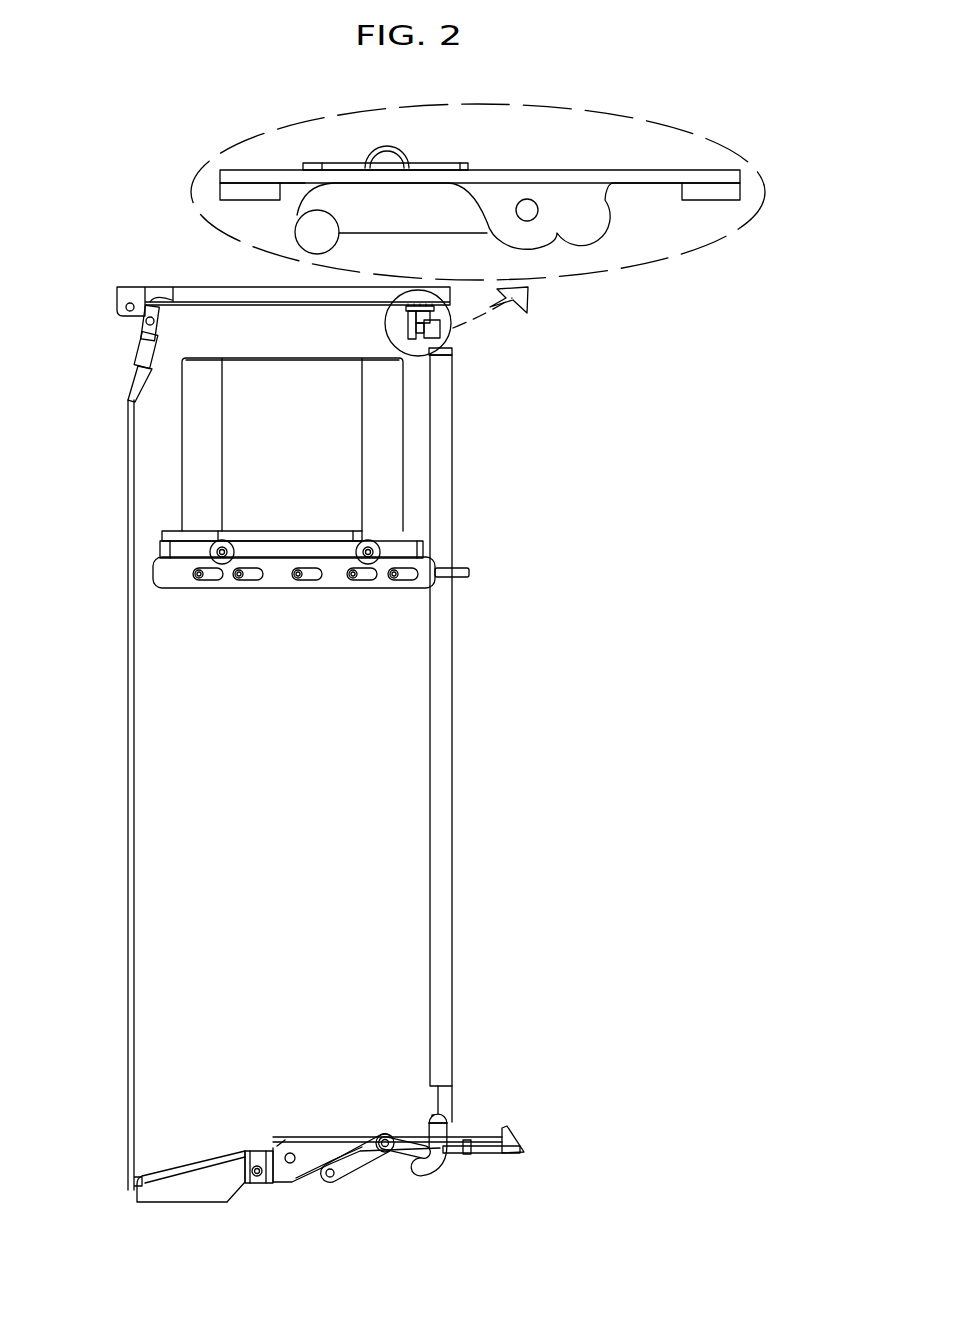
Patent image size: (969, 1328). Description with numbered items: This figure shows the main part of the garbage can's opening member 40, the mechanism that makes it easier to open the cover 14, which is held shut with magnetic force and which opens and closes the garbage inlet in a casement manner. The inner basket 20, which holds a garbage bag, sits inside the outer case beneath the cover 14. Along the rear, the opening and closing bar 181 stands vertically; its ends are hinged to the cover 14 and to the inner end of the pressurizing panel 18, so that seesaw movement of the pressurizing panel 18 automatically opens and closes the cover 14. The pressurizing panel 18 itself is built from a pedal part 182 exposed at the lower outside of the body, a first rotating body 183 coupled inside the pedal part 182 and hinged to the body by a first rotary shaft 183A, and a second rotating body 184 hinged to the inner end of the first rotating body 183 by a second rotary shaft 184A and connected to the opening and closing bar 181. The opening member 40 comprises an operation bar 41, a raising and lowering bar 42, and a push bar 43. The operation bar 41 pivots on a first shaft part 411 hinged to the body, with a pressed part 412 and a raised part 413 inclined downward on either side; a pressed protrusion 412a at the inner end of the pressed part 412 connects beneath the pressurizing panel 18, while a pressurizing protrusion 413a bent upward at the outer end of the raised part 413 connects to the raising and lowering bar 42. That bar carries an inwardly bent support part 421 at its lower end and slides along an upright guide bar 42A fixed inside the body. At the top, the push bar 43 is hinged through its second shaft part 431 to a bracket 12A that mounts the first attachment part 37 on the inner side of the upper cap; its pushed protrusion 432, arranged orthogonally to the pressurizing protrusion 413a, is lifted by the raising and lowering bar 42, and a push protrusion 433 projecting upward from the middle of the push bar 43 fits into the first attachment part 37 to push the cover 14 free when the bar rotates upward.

The bracket 12A is at (554, 191).
The first attachment part 37 is at (335, 165).
The push protrusion 433 is at (390, 152).
The pushed protrusion 432 is at (317, 232).
The push bar 43 is at (440, 207).
The second shaft part 431 is at (538, 212).
The cover 14 is at (200, 293).
The opening and closing bar 181 is at (130, 845).
The inner basket 20 is at (176, 462).
The opening member 40 is at (463, 660).
The guide bar 42A is at (450, 758).
The raising and lowering bar 42 is at (446, 1095).
The support part 421 is at (433, 1117).
The operation bar 41 is at (429, 1134).
The raised part 413 is at (418, 1168).
The pressurizing protrusion 413a is at (440, 1130).
The pressed part 412 is at (357, 1162).
The pressed protrusion 412a is at (330, 1170).
The first shaft part 411 is at (385, 1135).
The pedal part 182 is at (524, 1142).
The pressurizing panel 18 is at (288, 1131).
The first rotating body 183 is at (322, 1162).
The first rotary shaft 183A is at (288, 1152).
The second rotary shaft 184A is at (256, 1177).
The second rotating body 184 is at (215, 1146).